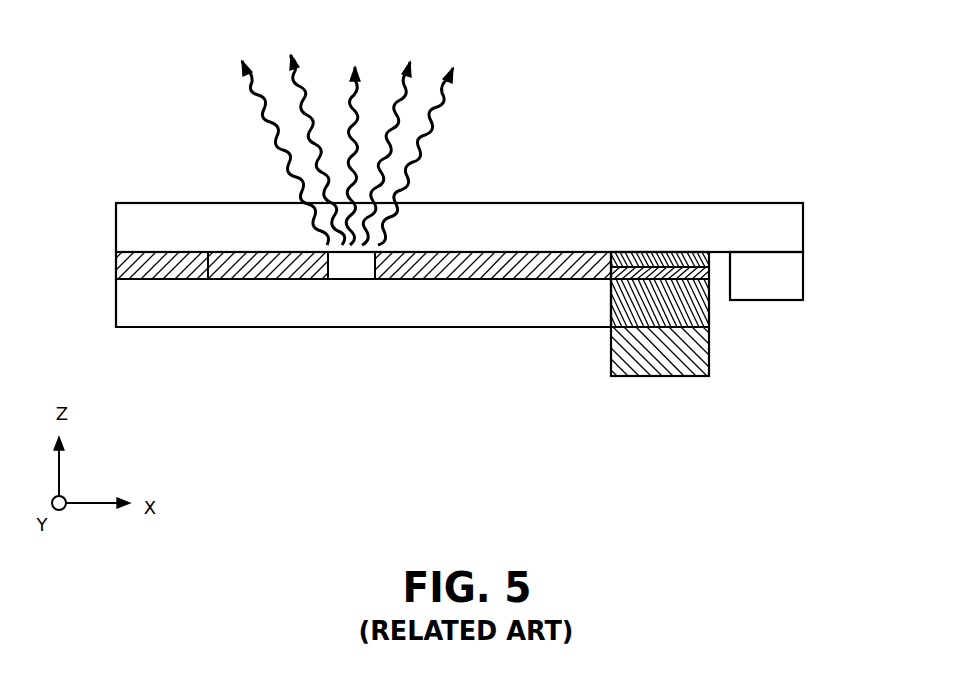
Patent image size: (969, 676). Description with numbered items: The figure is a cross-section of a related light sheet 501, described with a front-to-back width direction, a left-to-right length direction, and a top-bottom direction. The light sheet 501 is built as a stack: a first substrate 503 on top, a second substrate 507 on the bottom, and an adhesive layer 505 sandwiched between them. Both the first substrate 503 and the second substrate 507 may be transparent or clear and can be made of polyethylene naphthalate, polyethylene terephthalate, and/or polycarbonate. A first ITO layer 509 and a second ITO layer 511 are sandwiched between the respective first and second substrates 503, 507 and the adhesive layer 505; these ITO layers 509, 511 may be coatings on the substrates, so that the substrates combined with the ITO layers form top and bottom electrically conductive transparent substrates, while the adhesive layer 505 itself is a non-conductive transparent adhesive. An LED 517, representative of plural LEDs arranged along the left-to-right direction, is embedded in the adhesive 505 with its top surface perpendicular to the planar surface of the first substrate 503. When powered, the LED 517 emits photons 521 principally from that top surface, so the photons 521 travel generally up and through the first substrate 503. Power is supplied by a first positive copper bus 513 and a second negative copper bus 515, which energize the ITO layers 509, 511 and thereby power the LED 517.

The light sheet 501 is at (647, 50).
The first substrate 503 is at (116, 227).
The adhesive layer 505 is at (116, 265).
The second substrate 507 is at (116, 307).
The first indium tin oxide (ITO) layer 509 is at (208, 279).
The second indium tin oxide (ITO) layer 511 is at (325, 279).
The first positive (+) copper bus 513 is at (806, 279).
The second negative (−) copper bus 515 is at (685, 376).
The light emitting diode (LED) 517 is at (350, 268).
The photons 521 is at (438, 143).